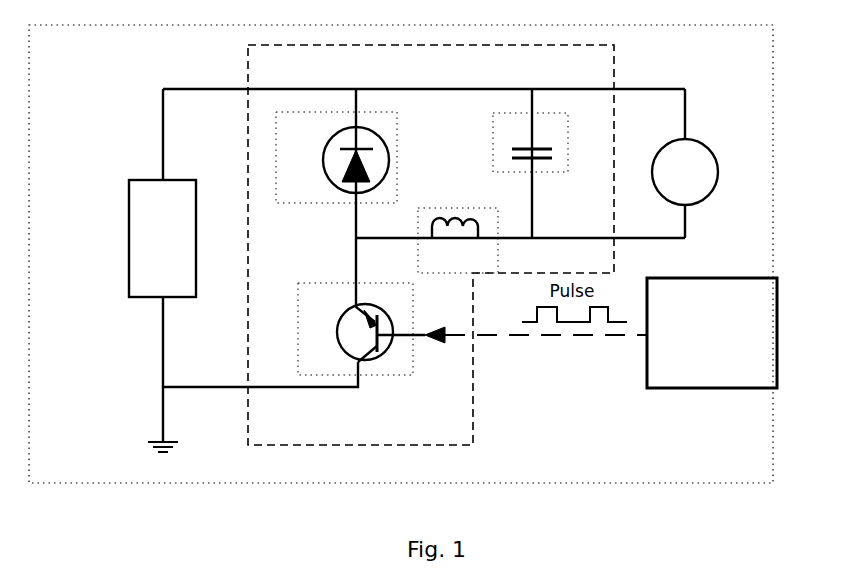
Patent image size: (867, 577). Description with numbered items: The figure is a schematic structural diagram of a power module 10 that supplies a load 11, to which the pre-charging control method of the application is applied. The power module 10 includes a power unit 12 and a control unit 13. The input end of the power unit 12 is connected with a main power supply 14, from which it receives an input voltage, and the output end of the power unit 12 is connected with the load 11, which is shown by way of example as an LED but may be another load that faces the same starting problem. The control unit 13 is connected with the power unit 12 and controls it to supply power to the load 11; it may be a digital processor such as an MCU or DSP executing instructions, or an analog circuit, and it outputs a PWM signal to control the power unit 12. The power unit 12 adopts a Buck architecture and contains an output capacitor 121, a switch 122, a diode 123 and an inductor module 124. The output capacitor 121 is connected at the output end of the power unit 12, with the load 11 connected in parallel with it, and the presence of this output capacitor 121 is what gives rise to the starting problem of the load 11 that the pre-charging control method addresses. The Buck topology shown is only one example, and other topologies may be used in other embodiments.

The power module 10 is at (775, 72).
The load 11 is at (697, 139).
The power unit 12 is at (468, 244).
The control unit 13 is at (712, 316).
The main power supply 14 is at (128, 253).
The output capacitor 121 is at (507, 112).
The switch 122 is at (383, 375).
The diode 123 is at (317, 112).
The inductor module 124 is at (440, 208).